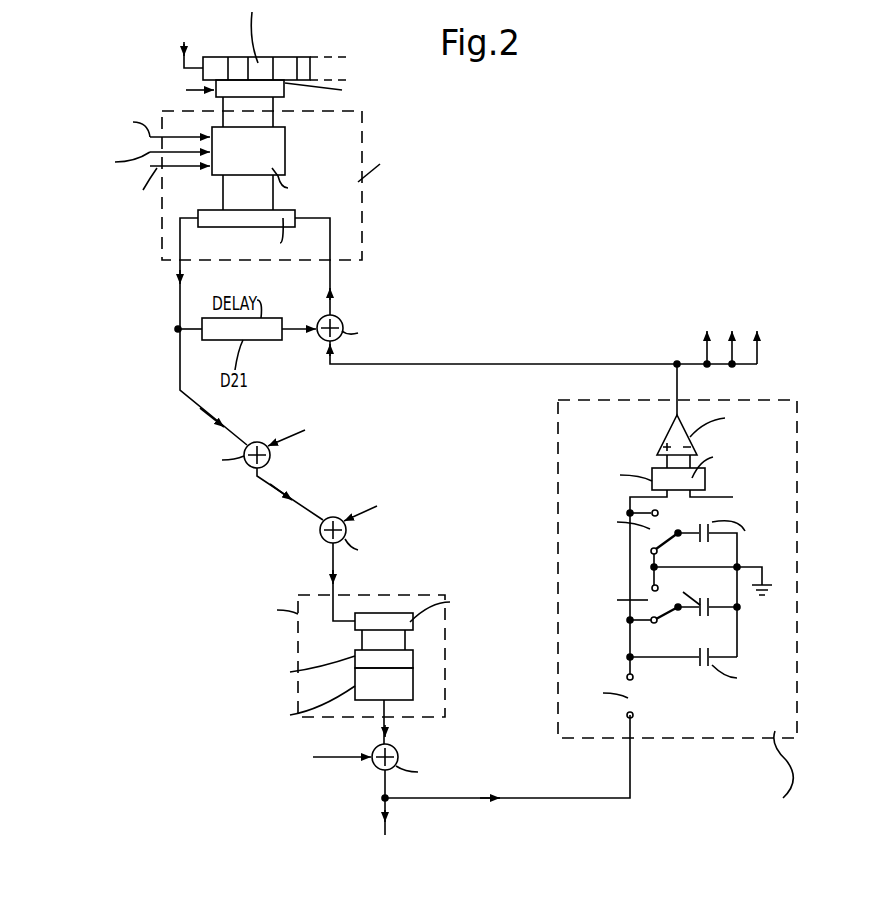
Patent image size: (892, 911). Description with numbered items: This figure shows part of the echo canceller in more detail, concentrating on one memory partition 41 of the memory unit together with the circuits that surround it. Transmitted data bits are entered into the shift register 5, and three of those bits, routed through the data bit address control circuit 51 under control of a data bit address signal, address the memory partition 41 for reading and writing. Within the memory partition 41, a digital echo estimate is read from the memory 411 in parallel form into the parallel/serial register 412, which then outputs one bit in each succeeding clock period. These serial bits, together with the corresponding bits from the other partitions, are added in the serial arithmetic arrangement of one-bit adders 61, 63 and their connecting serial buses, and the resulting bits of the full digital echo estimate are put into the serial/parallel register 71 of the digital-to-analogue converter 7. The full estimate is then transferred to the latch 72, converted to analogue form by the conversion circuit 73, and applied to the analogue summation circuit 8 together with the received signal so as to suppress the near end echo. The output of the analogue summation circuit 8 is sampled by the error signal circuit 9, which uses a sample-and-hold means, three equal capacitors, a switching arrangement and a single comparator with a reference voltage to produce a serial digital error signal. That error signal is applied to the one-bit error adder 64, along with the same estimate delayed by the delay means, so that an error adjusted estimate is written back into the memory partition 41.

The shift register 5 is at (308, 55).
The data bit address control circuit 51 is at (284, 89).
The memory partition 41 is at (373, 137).
The memory 411 is at (285, 154).
The parallel/serial register 412 is at (208, 207).
The one-bit error adder 64 is at (340, 320).
The one-bit adder 61 is at (270, 462).
The one-bit adder 63 is at (320, 540).
The digital-to-analogue converter 7 is at (298, 651).
The serial/parallel register 71 is at (413, 613).
The latch 72 is at (413, 660).
The conversion circuit 73 is at (413, 691).
The analogue summation circuit 8 is at (398, 752).
The error signal circuit 9 is at (712, 738).